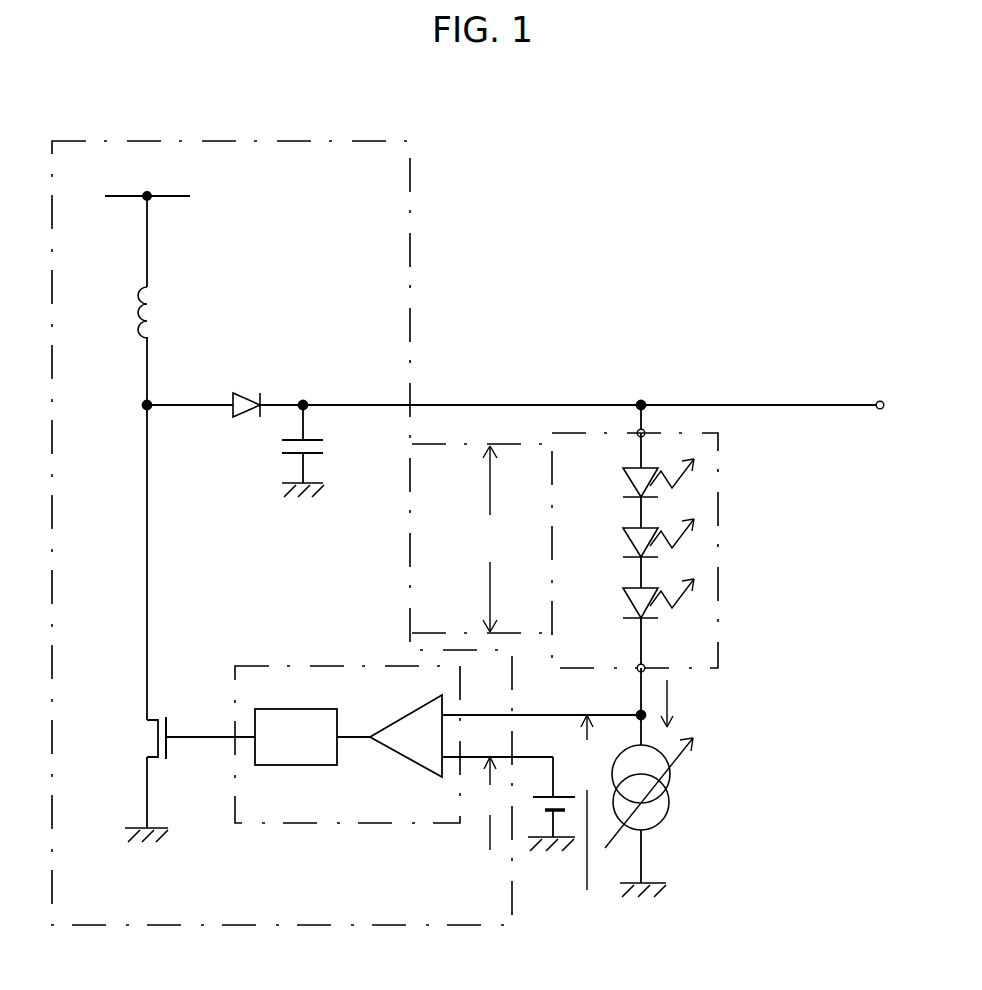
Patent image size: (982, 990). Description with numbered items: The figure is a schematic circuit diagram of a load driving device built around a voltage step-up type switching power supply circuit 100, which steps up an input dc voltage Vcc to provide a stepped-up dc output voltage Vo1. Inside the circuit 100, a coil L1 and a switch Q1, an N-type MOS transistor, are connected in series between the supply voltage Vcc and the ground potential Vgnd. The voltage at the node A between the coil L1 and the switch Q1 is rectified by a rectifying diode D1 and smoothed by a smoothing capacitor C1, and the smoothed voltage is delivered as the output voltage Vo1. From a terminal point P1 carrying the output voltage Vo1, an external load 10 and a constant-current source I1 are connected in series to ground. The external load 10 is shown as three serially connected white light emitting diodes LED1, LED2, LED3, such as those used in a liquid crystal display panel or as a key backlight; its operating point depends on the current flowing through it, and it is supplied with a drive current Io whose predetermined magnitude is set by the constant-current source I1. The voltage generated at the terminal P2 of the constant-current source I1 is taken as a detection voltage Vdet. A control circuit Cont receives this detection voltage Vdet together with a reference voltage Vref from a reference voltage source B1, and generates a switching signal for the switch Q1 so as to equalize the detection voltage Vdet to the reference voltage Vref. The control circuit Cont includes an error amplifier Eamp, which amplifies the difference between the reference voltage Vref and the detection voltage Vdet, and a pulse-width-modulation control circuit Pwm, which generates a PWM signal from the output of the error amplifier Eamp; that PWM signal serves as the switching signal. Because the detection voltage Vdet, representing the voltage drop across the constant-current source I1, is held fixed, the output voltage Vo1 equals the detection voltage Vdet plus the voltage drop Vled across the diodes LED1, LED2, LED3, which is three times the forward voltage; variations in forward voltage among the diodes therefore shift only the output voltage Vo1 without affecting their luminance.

The switching power supply circuit 100 is at (418, 171).
The external load 10 is at (718, 457).
The coil L1 is at (167, 312).
The rectifying diode D1 is at (248, 388).
The smoothing capacitor C1 is at (318, 451).
The switch Q1 is at (157, 737).
The control circuit Cont is at (263, 666).
The pulse-width-modulation control circuit Pwm is at (272, 709).
The error amplifier Eamp is at (392, 718).
The reference voltage source B1 is at (540, 824).
The constant-current source I1 is at (677, 798).
The light emitting diode LED1 is at (630, 478).
The light emitting diode LED2 is at (630, 538).
The light emitting diode LED3 is at (630, 598).
The input dc voltage Vcc is at (168, 196).
The node A is at (134, 406).
The output voltage Vo1 is at (879, 390).
The terminal point P1 is at (652, 421).
The terminal P2 is at (630, 677).
The voltage drop across the LEDs Vled is at (482, 538).
The detection voltage Vdet is at (586, 802).
The reference voltage Vref is at (485, 803).
The drive current Io is at (674, 703).
The ground potential Vgnd is at (673, 867).